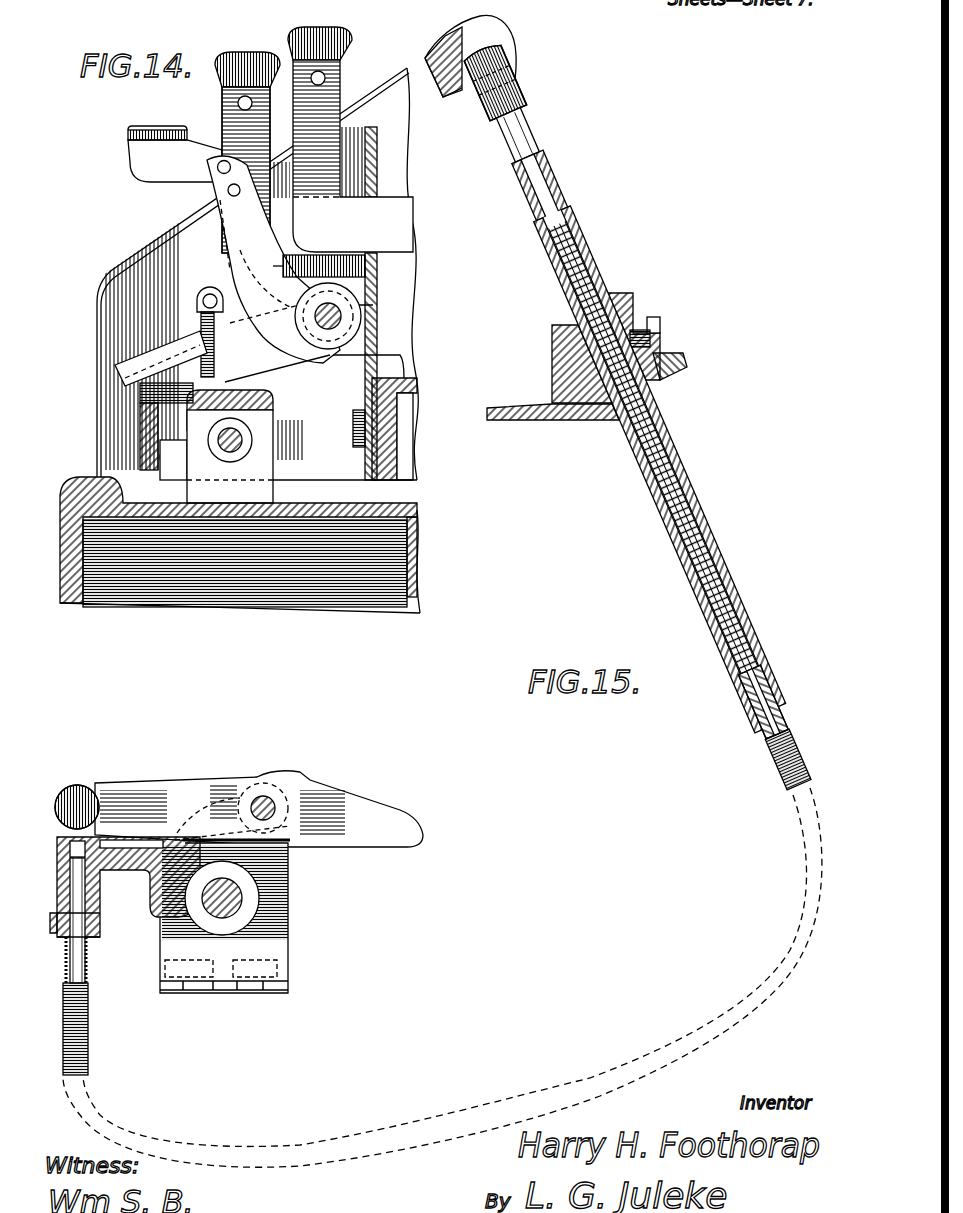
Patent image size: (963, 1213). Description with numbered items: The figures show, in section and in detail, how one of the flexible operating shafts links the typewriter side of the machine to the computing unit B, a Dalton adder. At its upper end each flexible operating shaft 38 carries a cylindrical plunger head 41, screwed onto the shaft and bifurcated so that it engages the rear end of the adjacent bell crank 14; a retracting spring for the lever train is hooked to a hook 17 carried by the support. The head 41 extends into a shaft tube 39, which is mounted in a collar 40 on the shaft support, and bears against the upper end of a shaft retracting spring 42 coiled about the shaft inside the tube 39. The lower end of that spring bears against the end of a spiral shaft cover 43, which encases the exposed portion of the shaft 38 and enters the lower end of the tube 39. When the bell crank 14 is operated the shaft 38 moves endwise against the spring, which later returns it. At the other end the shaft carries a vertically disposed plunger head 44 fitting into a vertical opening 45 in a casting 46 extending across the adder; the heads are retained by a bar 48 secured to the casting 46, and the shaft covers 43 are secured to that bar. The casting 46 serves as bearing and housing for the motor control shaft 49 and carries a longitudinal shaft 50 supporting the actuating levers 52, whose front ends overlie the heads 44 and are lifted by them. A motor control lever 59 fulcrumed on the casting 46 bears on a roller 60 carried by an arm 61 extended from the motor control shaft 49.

In FIG. 15, the bell crank 14 is at (500, 44).
In FIG. 14, the hook 17 is at (222, 112).
In FIG. 15, the flexible operating shaft 38 is at (760, 667).
In FIG. 15, the shaft tube 39 is at (687, 475).
In FIG. 15, the collar 40 is at (660, 340).
In FIG. 15, the plunger head 41 is at (537, 158).
In FIG. 15, the shaft retracting spring 42 is at (580, 248).
In FIG. 15, the spiral shaft cover 43 is at (88, 1017).
In FIG. 15, the plunger head 44 is at (100, 883).
In FIG. 15, the vertical opening 45 is at (100, 907).
In FIG. 14, the casting 46 is at (273, 493).
In FIG. 15, the casting 46 is at (280, 937).
In FIG. 15, the bar 48 is at (100, 937).
In FIG. 14, the motor control shaft 49 is at (253, 443).
In FIG. 15, the motor control shaft 49 is at (243, 902).
In FIG. 15, the longitudinal shaft 50 is at (271, 800).
In FIG. 15, the actuating lever 52 is at (403, 810).
In FIG. 14, the motor control lever 59 is at (153, 430).
In FIG. 14, the roller 60 is at (176, 474).
In FIG. 14, the arm 61 is at (165, 466).
In FIG. 14, the computing unit B is at (387, 274).